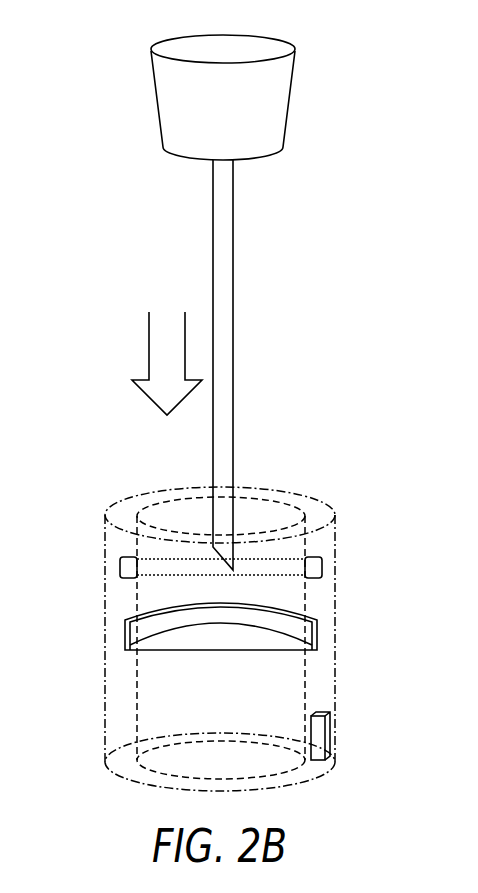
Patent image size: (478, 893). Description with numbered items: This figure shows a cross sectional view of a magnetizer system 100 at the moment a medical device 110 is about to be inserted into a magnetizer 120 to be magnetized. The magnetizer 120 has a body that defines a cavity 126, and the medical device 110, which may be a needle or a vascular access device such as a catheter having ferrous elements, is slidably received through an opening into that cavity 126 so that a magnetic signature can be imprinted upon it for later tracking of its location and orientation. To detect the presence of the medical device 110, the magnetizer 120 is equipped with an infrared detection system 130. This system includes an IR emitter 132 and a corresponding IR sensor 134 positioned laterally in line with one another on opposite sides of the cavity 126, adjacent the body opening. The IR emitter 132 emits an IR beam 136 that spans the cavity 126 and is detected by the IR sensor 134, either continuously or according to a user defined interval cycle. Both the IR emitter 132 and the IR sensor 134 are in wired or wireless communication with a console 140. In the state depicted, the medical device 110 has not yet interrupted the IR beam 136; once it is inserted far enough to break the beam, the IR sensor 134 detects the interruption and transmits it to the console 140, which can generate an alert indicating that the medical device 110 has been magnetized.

The magnetizer system 100 is at (330, 258).
The medical device 110 is at (233, 221).
The magnetizer 120 is at (285, 457).
The cavity 126 is at (152, 705).
The infrared detection system 130 is at (352, 623).
The IR emitter 132 is at (122, 565).
The IR sensor 134 is at (322, 566).
The IR beam 136 is at (177, 568).
The console 140 is at (330, 722).